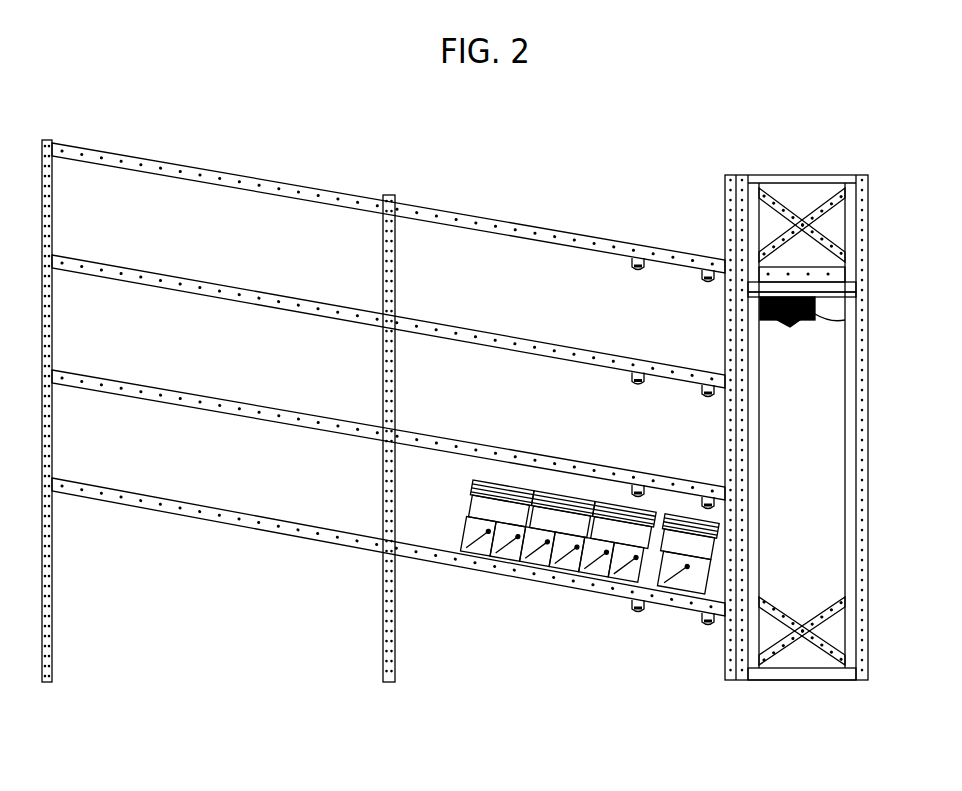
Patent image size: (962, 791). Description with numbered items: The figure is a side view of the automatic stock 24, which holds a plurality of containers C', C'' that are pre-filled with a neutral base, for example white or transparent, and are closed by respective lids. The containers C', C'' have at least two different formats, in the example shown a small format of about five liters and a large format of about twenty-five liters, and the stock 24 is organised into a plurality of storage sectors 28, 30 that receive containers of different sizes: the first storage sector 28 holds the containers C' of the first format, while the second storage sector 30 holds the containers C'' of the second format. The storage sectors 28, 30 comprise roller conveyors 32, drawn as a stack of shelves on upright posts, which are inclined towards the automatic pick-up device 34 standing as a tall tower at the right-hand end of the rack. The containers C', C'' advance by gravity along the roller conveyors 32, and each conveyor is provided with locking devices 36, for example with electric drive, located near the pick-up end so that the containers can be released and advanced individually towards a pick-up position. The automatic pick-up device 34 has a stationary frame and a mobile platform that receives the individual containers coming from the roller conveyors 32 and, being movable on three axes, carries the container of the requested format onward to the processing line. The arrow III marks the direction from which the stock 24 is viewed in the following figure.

The automatic stock 24 is at (752, 133).
The first storage sector 28 is at (388, 201).
The second storage sector 30 is at (553, 208).
The roller conveyors 32 is at (226, 286).
The automatic pick-up device 34 is at (874, 263).
The locking devices 36 is at (707, 285).
The containers of the first format C' is at (593, 473).
The containers of the second format C'' is at (574, 567).
The arrow III is at (894, 413).